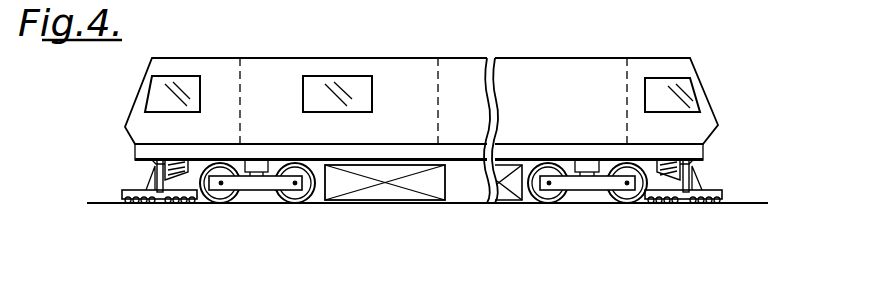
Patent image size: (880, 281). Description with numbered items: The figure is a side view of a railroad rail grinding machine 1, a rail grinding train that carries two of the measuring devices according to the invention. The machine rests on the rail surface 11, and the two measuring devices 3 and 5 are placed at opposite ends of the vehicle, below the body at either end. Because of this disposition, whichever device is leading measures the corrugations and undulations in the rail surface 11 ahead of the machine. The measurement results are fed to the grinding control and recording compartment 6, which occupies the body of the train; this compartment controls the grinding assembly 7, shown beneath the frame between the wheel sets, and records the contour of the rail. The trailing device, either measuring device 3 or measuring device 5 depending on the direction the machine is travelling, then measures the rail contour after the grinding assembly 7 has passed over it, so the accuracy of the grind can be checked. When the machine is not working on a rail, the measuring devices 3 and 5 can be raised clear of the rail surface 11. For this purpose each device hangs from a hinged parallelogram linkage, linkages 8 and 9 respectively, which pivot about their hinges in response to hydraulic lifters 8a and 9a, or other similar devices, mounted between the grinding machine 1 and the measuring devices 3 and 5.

The railroad rail grinding machine 1 is at (410, 121).
The measuring device 3 is at (139, 176).
The measuring device 5 is at (712, 175).
The grinding control and recording compartment 6 is at (274, 62).
The grinding assembly 7 is at (372, 191).
The hinged parallelogram linkage 8 is at (176, 160).
The hydraulic lifter 8a is at (158, 168).
The hinged parallelogram linkage 9 is at (670, 165).
The hydraulic lifter 9a is at (702, 163).
The rail surface 11 is at (744, 202).